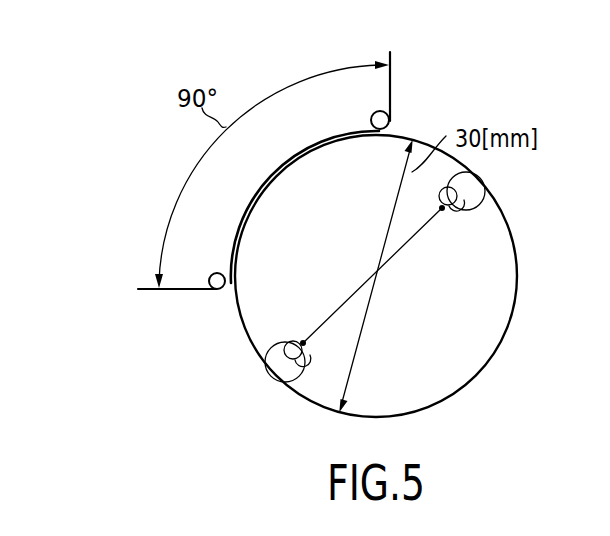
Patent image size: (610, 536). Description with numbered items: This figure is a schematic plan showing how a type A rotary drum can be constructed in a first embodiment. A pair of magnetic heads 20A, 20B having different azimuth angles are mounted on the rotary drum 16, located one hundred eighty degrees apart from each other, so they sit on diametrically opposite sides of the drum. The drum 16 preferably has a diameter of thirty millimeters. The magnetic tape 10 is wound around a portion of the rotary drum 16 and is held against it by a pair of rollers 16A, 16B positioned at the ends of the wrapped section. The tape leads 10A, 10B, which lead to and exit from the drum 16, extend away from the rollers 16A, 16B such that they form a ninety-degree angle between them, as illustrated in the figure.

The magnetic tape 10 is at (391, 82).
The tape lead 10A is at (142, 290).
The tape lead 10B is at (391, 52).
The rotary drum 16 is at (514, 245).
The roller 16A is at (215, 290).
The roller 16B is at (390, 118).
The magnetic head 20A is at (455, 210).
The magnetic head 20B is at (286, 343).